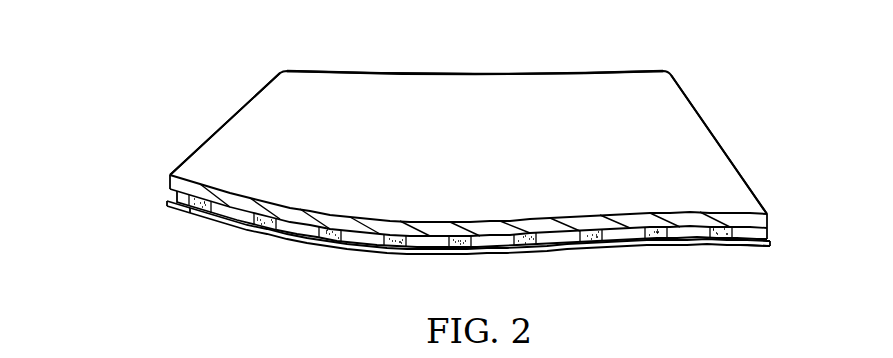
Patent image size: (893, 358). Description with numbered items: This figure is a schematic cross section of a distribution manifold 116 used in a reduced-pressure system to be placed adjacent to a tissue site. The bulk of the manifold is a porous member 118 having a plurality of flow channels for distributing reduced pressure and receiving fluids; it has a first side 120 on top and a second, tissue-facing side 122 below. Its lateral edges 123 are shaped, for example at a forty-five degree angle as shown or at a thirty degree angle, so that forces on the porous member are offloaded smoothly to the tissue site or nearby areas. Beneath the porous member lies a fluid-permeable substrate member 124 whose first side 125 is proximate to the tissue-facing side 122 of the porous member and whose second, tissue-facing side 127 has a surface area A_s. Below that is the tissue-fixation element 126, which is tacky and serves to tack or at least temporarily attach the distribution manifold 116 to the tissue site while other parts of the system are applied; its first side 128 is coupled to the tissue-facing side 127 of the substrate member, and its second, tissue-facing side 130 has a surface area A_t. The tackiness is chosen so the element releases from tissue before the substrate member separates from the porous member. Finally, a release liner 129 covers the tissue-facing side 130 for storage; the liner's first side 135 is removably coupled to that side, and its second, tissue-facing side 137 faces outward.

The distribution manifold 116 is at (609, 74).
The porous member 118 is at (498, 123).
The first side 120 is at (374, 71).
The second, tissue-facing side 122 is at (207, 172).
The lateral edges 123 is at (226, 121).
The fluid-permeable substrate member 124 is at (653, 213).
The first side 125 is at (300, 209).
The tissue-fixation element 126 is at (487, 243).
The second, tissue-facing side 127 is at (166, 193).
The first side 128 is at (458, 238).
The release liner 129 is at (769, 246).
The second, tissue-facing side 130 is at (456, 251).
The first side 135 is at (768, 237).
The second, tissue-facing side 137 is at (748, 248).